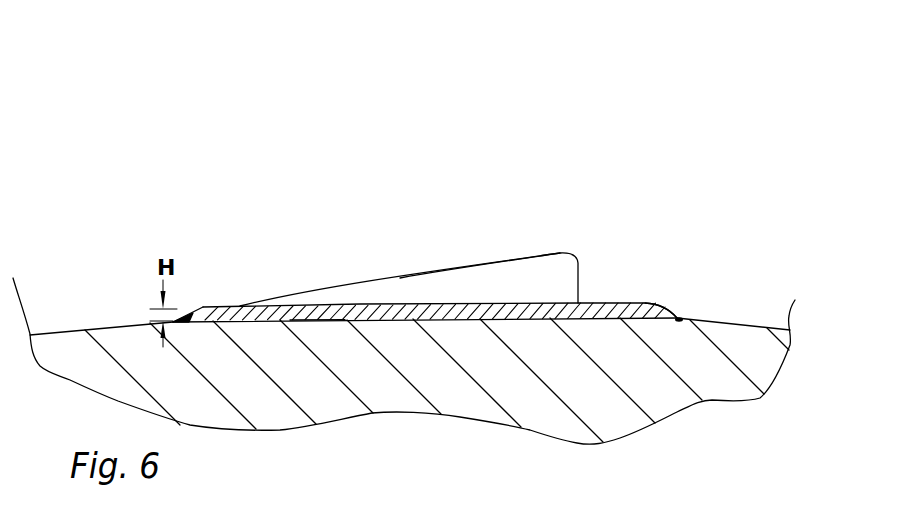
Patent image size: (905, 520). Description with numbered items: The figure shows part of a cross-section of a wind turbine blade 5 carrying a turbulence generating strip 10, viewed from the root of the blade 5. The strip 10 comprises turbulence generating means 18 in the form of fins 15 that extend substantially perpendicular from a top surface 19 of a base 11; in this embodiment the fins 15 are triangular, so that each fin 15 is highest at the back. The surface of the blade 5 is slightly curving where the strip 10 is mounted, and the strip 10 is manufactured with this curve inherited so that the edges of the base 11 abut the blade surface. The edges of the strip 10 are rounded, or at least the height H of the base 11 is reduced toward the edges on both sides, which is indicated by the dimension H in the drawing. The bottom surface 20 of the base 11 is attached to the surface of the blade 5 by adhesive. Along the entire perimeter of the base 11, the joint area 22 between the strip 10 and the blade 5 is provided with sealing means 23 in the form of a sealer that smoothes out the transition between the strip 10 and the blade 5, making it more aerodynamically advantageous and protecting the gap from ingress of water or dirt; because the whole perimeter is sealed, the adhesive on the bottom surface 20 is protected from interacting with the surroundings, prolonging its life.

The wind turbine blade 5 is at (742, 345).
The turbulence generating strip 10 is at (300, 221).
The base 11 is at (592, 312).
The fin 15 is at (432, 283).
The turbulence generating means 18 is at (492, 277).
The top surface 19 is at (235, 304).
The bottom surface 20 is at (315, 320).
The joint area 22 is at (679, 316).
The sealing means 23 is at (678, 322).